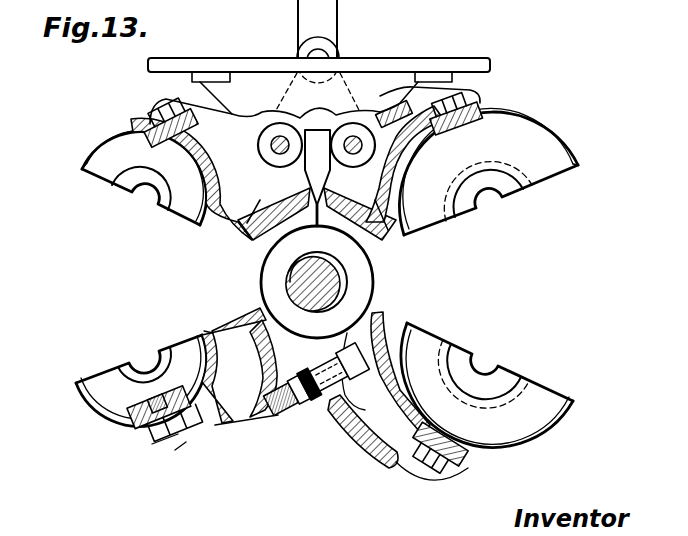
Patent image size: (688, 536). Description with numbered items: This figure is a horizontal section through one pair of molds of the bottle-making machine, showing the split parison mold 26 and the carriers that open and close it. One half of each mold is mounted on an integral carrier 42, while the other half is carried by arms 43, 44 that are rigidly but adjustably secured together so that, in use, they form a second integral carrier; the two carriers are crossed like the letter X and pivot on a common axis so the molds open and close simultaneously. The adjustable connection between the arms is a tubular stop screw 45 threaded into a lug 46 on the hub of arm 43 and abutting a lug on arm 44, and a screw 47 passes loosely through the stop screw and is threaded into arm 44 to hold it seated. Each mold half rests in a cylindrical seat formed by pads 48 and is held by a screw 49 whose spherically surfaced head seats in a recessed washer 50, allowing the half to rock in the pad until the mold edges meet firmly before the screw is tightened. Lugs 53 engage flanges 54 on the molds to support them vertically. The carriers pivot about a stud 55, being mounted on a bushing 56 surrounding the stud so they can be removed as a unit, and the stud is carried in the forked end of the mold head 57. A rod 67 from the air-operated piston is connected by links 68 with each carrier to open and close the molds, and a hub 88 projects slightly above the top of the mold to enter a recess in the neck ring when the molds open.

The parison mold 26 is at (106, 190).
The integral carrier 42 is at (397, 490).
The arm 43 is at (474, 103).
The arm 44 is at (228, 430).
The tubular stop screw 45 is at (310, 407).
The lug 46 is at (328, 407).
The screw 47 is at (372, 333).
The pads 48 is at (502, 110).
The screw 49 is at (182, 444).
The washer 50 is at (160, 444).
The lugs 53 is at (210, 227).
The flanges 54 is at (84, 164).
The stud 55 is at (300, 278).
The bushing 56 is at (288, 288).
The mold head 57 is at (247, 83).
The rod 67 is at (337, 8).
The links 68 is at (338, 110).
The hub 88 is at (128, 195).